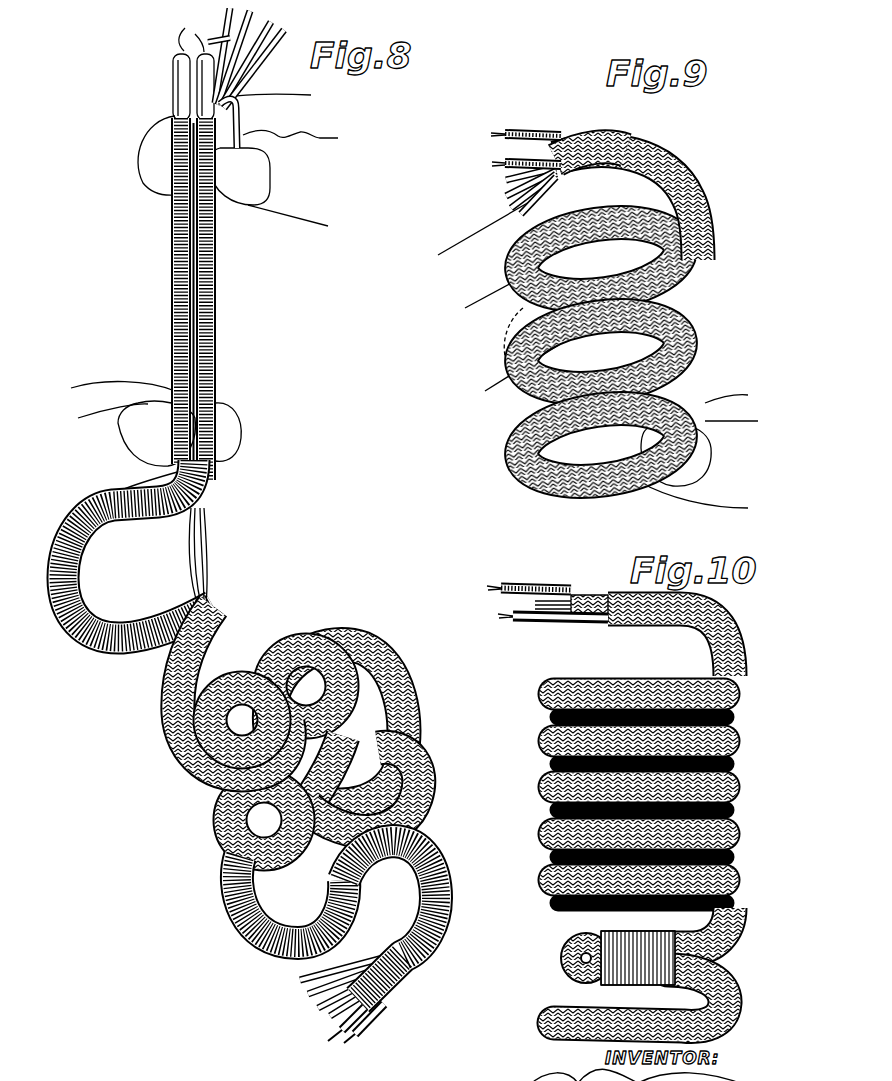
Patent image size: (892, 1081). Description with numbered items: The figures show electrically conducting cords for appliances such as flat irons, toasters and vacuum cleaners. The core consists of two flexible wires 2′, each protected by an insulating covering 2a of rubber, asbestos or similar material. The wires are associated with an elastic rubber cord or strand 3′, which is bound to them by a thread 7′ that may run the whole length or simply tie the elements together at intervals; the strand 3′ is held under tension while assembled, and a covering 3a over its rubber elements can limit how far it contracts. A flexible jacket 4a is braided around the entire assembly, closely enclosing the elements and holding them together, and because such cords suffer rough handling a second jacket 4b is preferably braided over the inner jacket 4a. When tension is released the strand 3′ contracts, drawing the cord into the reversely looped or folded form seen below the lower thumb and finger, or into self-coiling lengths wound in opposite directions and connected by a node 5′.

In FIG. 8, the flexible wire 2′ is at (196, 28).
In FIG. 9, the flexible wire 2′ is at (492, 155).
In FIG. 10, the flexible wire 2′ is at (492, 607).
In FIG. 8, the insulating covering 2a is at (200, 67).
In FIG. 9, the insulating covering 2a is at (520, 153).
In FIG. 10, the insulating covering 2a is at (513, 606).
In FIG. 8, the rubber cord or strand 3′ is at (168, 215).
In FIG. 9, the rubber cord or strand 3′ is at (503, 202).
In FIG. 10, the rubber cord or strand 3′ is at (551, 610).
In FIG. 9, the covering of rubber strand 3a is at (600, 145).
In FIG. 10, the covering of rubber strand 3a is at (578, 590).
In FIG. 8, the flexible jacket or cover 4a is at (220, 623).
In FIG. 9, the flexible jacket or cover 4a is at (700, 227).
In FIG. 10, the flexible jacket or cover 4a is at (702, 628).
In FIG. 8, the second jacket 4b is at (337, 643).
In FIG. 8, the thread 7′ is at (168, 128).
In FIG. 10, the node 5′ is at (555, 950).